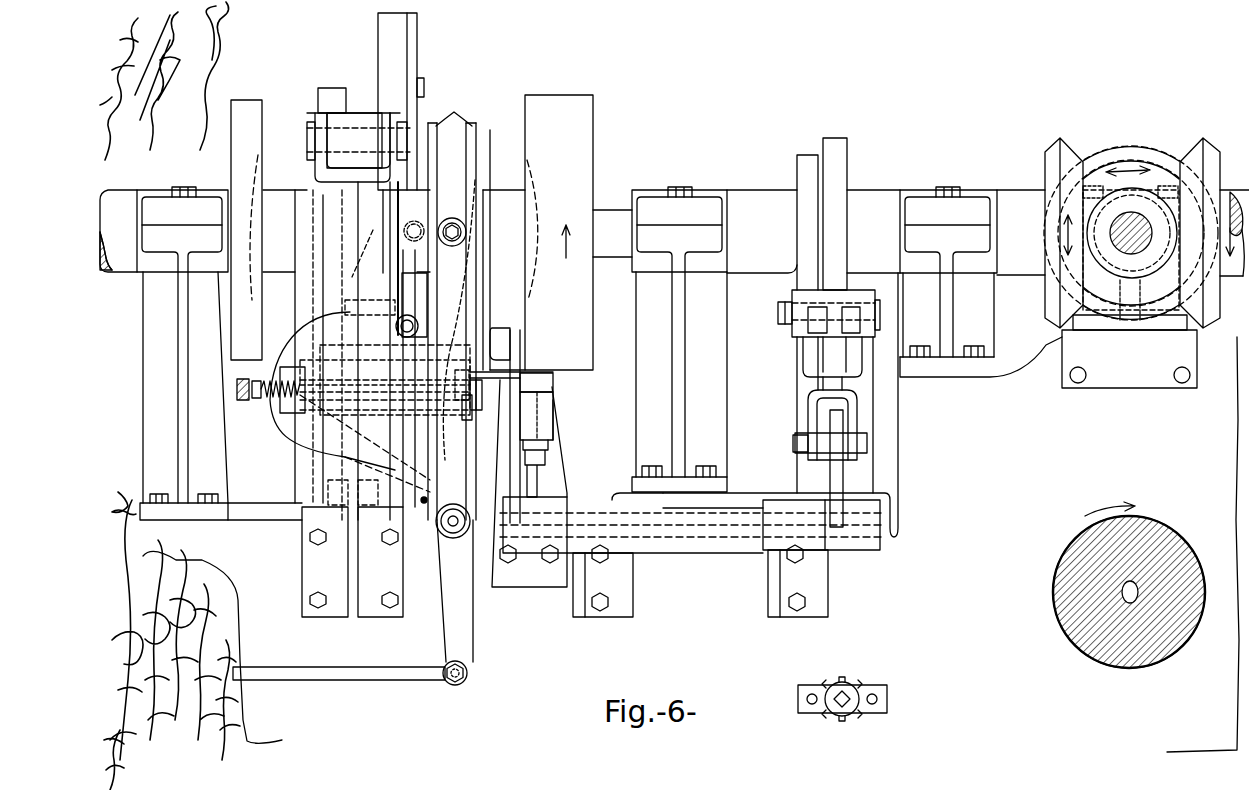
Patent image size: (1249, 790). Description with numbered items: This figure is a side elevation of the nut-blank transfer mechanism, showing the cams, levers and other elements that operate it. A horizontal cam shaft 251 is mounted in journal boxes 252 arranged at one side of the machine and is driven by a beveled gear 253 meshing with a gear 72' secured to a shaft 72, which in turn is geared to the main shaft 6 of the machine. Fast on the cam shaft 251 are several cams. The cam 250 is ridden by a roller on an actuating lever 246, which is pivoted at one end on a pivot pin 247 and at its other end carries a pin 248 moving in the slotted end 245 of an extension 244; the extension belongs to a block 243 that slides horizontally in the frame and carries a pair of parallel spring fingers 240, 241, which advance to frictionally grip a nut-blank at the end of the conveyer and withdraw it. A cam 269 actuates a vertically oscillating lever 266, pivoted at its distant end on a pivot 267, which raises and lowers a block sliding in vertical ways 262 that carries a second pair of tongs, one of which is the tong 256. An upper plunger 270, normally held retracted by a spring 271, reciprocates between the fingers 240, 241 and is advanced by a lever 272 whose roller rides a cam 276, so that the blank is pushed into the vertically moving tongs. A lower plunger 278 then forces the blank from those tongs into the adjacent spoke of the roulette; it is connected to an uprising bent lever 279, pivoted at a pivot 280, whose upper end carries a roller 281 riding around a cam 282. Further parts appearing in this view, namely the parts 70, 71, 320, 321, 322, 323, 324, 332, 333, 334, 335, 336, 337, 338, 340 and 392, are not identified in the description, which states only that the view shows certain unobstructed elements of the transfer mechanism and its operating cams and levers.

The main shaft 6 is at (1129, 585).
The shaft end 70 is at (1232, 194).
The side plate 71 is at (1212, 150).
The shaft 72 is at (1132, 233).
The gear 72' is at (1131, 255).
The spring finger 240 is at (446, 375).
The spring finger 241 is at (453, 402).
The block 243 is at (295, 370).
The extension 244 is at (385, 392).
The slotted end 245 is at (485, 402).
The actuating lever 246 is at (545, 385).
The pivot pin 247 is at (542, 418).
The pin 248 is at (468, 420).
The cam 250 is at (541, 232).
The shaft 251 is at (120, 262).
The journal boxes 252 is at (599, 353).
The beveled gear 253 is at (1050, 148).
The tongs 256 is at (385, 365).
The ways 262 is at (378, 33).
The vertically oscillating lever 266 is at (365, 120).
The pivot 267 is at (320, 122).
The cam 269 is at (332, 90).
The upper plunger 270 is at (385, 405).
The spring 271 is at (270, 400).
The lever 272 is at (245, 379).
The cam 276 is at (248, 106).
The lower plunger 278 is at (425, 503).
The bent lever 279 is at (297, 430).
The pivot 280 is at (396, 326).
The roller 281 is at (415, 222).
The cam 282 is at (403, 212).
The link 320 is at (312, 672).
The arm 321 is at (457, 262).
The pivot 322 is at (453, 530).
The pivot 323 is at (452, 220).
The channel 324 is at (459, 308).
The block 332 is at (500, 338).
The housing 333 is at (529, 458).
The bar 334 is at (731, 530).
The rod 335 is at (841, 492).
The clevis 336 is at (822, 345).
The yoke 337 is at (864, 412).
The block 338 is at (780, 316).
The bar 340 is at (836, 152).
The cam 392 is at (845, 690).